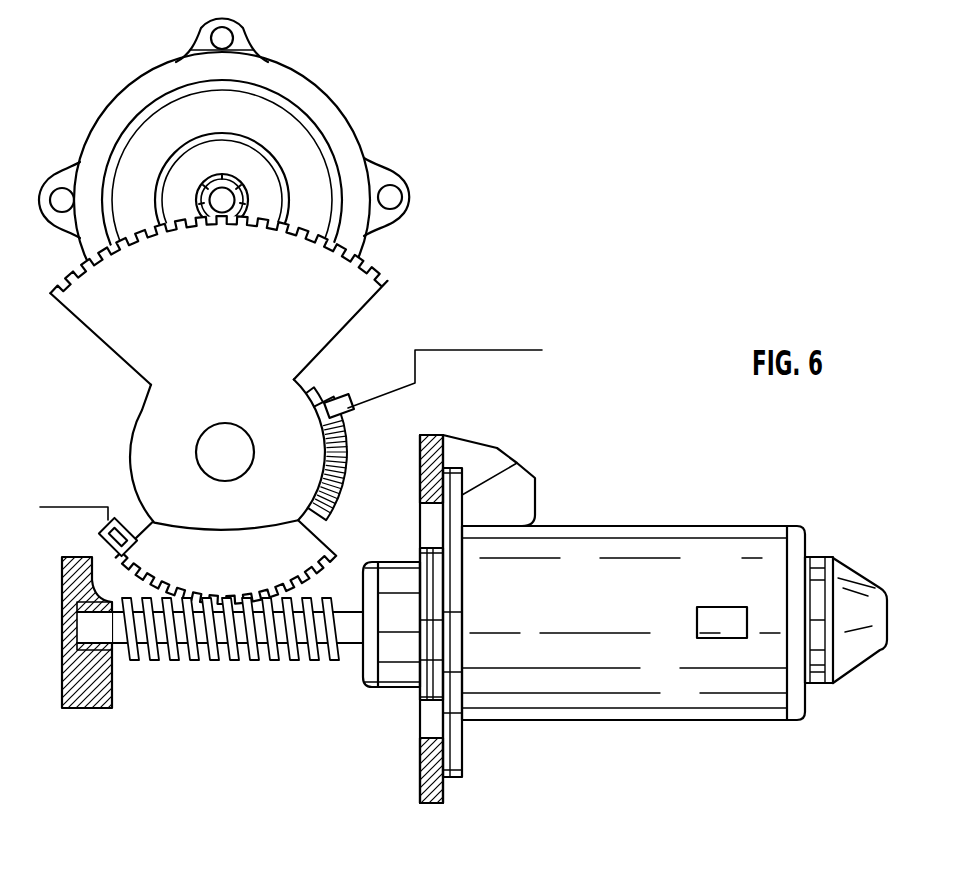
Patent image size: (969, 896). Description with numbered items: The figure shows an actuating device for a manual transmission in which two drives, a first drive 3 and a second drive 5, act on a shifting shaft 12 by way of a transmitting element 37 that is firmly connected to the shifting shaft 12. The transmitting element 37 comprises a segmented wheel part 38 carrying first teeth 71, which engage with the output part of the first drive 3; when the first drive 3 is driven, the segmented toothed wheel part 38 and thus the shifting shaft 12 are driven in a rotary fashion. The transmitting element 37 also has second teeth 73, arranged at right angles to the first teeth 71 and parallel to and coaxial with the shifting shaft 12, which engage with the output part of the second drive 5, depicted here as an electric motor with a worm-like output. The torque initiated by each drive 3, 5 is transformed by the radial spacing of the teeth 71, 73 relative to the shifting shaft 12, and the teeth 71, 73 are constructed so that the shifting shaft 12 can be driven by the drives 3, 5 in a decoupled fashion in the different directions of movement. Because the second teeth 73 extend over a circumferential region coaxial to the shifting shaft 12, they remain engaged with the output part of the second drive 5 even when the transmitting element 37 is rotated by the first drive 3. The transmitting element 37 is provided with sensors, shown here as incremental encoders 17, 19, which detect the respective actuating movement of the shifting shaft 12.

The first drive 3 is at (345, 122).
The second drive 5 is at (695, 542).
The shifting shaft 12 is at (228, 430).
The incremental encoder 17 is at (345, 390).
The incremental encoder 19 is at (103, 528).
The transmitting element 37 is at (142, 410).
The segmented wheel part 38 is at (102, 318).
The first teeth 71 is at (373, 262).
The second teeth 73 is at (340, 557).